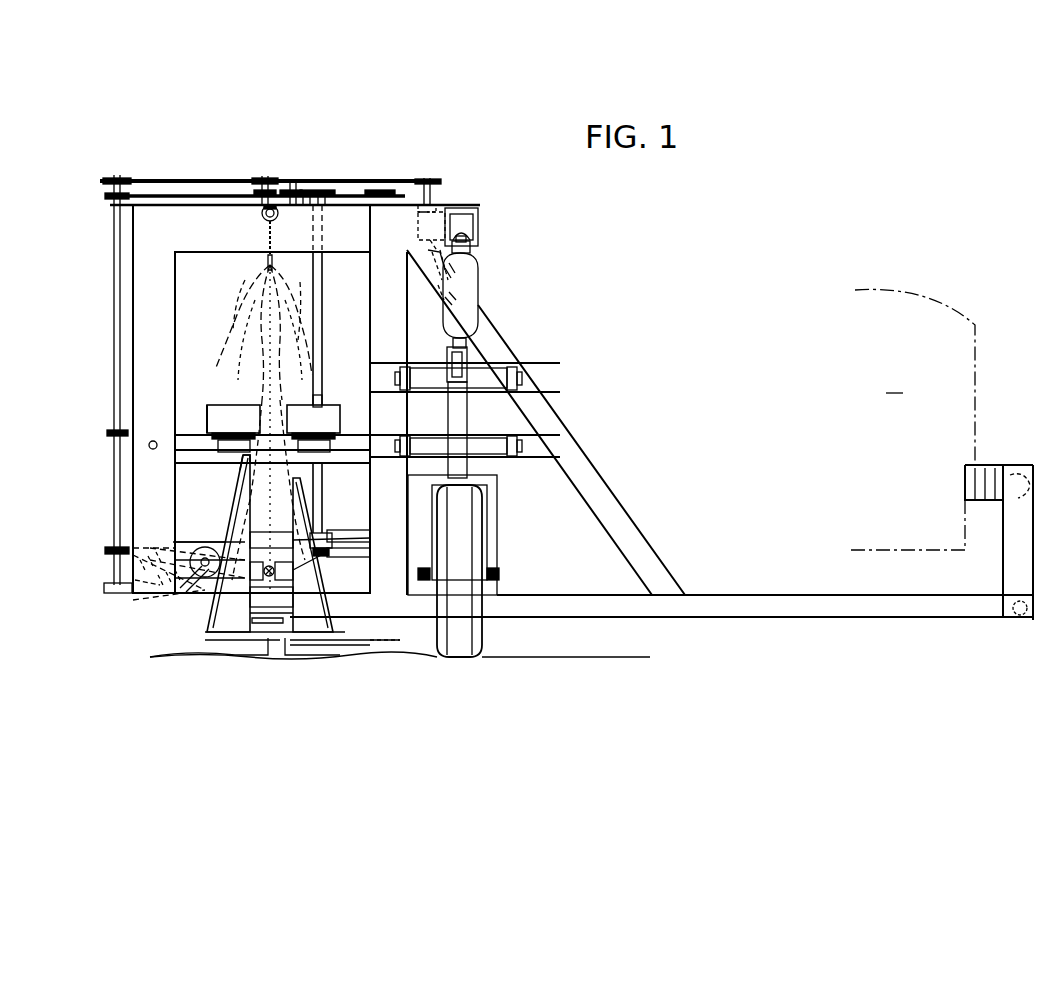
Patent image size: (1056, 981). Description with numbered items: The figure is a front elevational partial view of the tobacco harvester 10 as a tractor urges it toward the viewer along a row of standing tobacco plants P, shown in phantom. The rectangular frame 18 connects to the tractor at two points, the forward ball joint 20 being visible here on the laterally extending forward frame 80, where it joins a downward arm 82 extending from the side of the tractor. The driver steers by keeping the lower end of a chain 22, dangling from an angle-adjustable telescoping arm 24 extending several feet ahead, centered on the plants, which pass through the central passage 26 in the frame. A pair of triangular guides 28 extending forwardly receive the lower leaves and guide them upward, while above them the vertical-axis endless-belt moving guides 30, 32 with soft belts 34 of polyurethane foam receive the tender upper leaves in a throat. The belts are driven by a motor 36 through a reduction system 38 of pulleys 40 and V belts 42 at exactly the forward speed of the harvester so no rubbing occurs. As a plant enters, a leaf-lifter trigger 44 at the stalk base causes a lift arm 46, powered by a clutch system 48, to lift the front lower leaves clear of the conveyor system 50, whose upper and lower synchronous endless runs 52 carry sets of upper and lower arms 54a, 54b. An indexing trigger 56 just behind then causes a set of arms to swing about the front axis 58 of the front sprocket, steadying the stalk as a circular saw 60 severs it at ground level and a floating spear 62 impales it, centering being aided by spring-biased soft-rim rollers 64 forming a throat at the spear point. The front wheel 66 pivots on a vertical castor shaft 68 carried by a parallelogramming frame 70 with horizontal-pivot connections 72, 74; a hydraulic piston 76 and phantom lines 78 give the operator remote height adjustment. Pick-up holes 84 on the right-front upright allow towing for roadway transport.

The harvester 10 is at (565, 250).
The rectangular frame 18 is at (194, 241).
The forward ball joint 20 is at (1015, 622).
The chain 22 is at (266, 256).
The telescoping arm 24 is at (262, 214).
The central passage 26 is at (262, 385).
The triangular guides 28 is at (330, 635).
The moving guide 30 is at (205, 372).
The moving guide 32 is at (324, 378).
The soft belts 34 is at (210, 410).
The motor 36 is at (456, 212).
The reduction system 38 is at (277, 176).
The pulleys 40 is at (432, 188).
The V belts 42 is at (402, 190).
The leaf-lifter trigger 44 is at (245, 623).
The lift arm 46 is at (205, 622).
The clutch system 48 is at (195, 525).
The conveyor system 50 is at (358, 478).
The endless runs 52 is at (325, 530).
The upper arms 54a is at (234, 492).
The lower arms 54b is at (300, 600).
The indexing trigger 56 is at (284, 648).
The front axis 58 is at (320, 318).
The circular saw 60 is at (358, 645).
The floating spear 62 is at (216, 536).
The rollers 64 is at (300, 580).
The front wheel 66 is at (484, 642).
The castor shaft 68 is at (466, 418).
The parallelogramming frame 70 is at (470, 370).
The horizontal-pivot connection 72 is at (522, 374).
The horizontal-pivot connection 74 is at (530, 447).
The hydraulic piston 76 is at (470, 298).
The lines 78 is at (447, 308).
The forward frame 80 is at (665, 612).
The downward arm 82 is at (1003, 568).
The pick-up holes 84 is at (155, 380).
The tobacco plants P is at (232, 300).